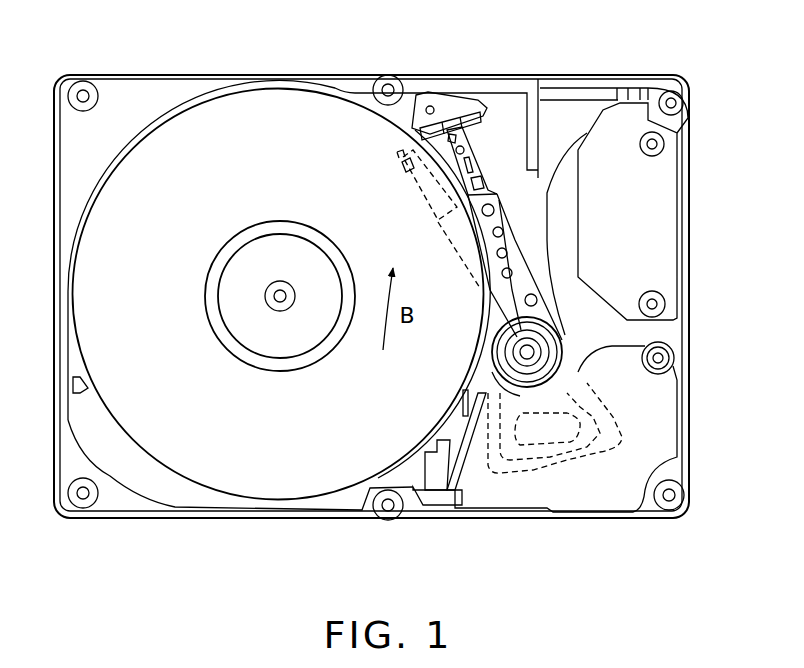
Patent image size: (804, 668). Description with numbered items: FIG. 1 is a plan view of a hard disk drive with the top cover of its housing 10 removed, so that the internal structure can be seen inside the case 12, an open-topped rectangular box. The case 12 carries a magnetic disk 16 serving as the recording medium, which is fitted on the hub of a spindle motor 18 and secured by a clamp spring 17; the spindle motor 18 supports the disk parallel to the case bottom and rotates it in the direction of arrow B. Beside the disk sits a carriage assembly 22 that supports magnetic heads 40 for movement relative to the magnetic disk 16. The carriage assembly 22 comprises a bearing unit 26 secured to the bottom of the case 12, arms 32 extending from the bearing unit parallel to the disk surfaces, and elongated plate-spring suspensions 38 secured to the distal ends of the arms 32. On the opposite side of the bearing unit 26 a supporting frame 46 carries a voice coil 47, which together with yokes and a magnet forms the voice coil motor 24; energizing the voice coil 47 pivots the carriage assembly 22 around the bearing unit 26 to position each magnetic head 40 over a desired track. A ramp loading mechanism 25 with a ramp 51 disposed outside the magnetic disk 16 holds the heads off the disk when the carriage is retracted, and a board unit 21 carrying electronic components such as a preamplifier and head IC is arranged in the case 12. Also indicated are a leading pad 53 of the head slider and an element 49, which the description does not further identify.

The housing 10 is at (203, 72).
The case 12 is at (128, 87).
The magnetic disk 16 is at (270, 95).
The clamp spring 17 is at (273, 348).
The spindle motor 18 is at (190, 308).
The board unit 21 is at (615, 128).
The carriage assembly 22 is at (514, 210).
The voice coil motor 24 is at (478, 430).
The ramp loading mechanism 25 is at (432, 88).
The bearing unit 26 is at (508, 355).
The arms 32 is at (527, 288).
The suspensions 38 is at (476, 166).
The magnetic heads 40 is at (400, 163).
The supporting frame 46 is at (610, 413).
The voice coil 47 is at (535, 447).
The connector 49 is at (667, 405).
The ramp 51 is at (468, 106).
The leading pad 53 is at (397, 155).